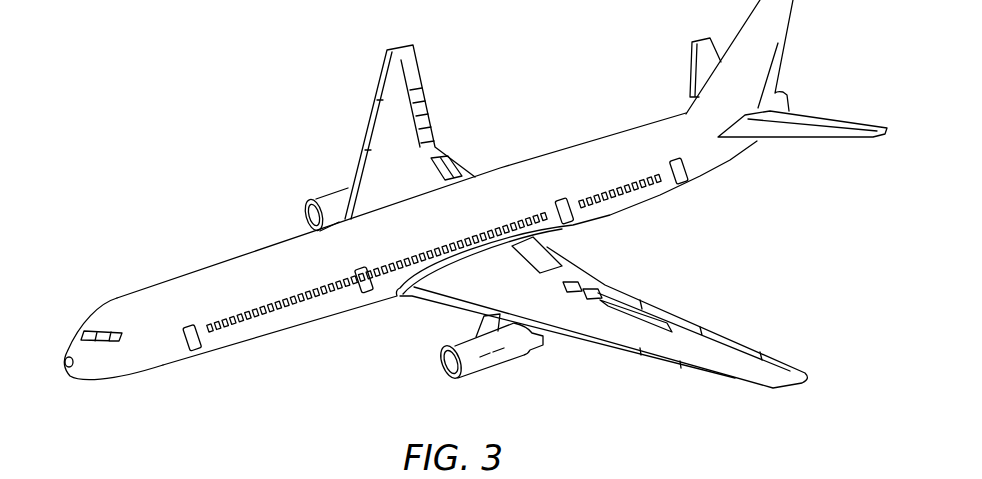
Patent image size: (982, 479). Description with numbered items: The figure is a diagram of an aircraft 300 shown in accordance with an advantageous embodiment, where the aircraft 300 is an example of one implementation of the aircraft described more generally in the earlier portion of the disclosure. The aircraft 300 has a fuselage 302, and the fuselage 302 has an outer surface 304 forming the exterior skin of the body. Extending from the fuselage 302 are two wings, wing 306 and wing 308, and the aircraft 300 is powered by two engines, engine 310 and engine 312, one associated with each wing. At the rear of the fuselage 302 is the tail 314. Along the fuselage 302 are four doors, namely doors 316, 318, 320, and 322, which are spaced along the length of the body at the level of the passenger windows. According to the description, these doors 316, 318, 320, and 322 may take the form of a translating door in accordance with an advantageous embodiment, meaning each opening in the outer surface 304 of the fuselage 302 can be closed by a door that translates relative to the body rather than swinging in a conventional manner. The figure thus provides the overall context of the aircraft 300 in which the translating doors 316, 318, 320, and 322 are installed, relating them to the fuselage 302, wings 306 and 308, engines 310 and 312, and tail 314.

The aircraft 300 is at (475, 215).
The fuselage 302 is at (190, 272).
The outer surface 304 is at (144, 363).
The wing 306 is at (422, 102).
The wing 308 is at (692, 323).
The engine 310 is at (322, 193).
The engine 312 is at (492, 367).
The tail 314 is at (773, 72).
The door 316 is at (198, 342).
The door 318 is at (372, 287).
The door 320 is at (571, 212).
The door 322 is at (686, 177).